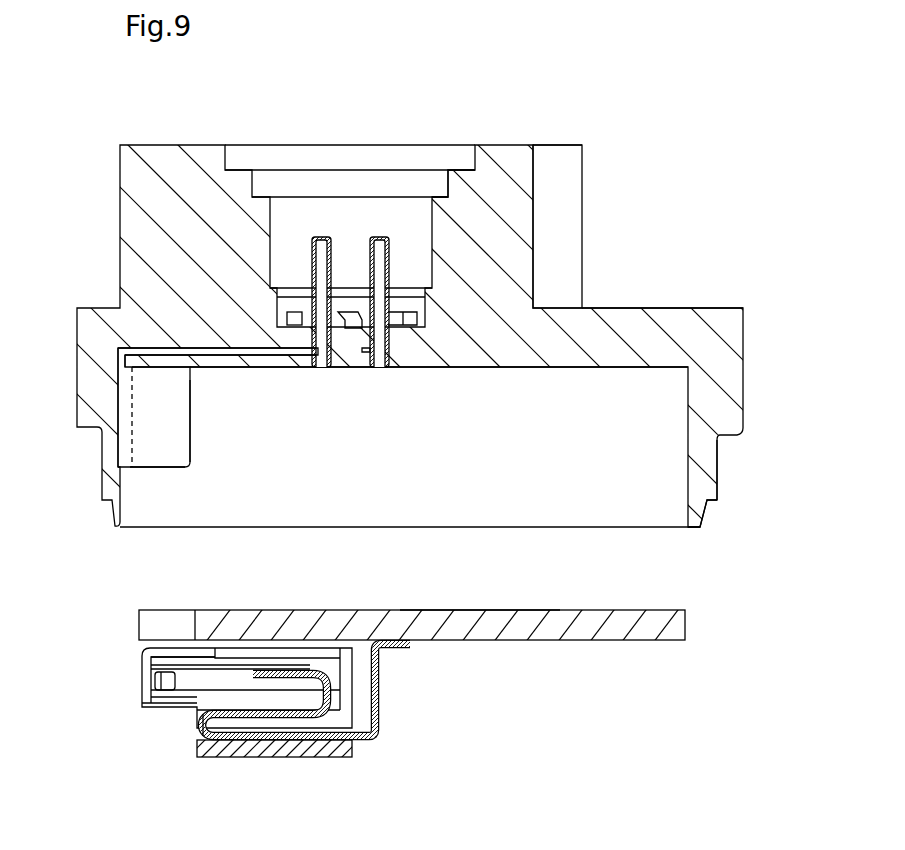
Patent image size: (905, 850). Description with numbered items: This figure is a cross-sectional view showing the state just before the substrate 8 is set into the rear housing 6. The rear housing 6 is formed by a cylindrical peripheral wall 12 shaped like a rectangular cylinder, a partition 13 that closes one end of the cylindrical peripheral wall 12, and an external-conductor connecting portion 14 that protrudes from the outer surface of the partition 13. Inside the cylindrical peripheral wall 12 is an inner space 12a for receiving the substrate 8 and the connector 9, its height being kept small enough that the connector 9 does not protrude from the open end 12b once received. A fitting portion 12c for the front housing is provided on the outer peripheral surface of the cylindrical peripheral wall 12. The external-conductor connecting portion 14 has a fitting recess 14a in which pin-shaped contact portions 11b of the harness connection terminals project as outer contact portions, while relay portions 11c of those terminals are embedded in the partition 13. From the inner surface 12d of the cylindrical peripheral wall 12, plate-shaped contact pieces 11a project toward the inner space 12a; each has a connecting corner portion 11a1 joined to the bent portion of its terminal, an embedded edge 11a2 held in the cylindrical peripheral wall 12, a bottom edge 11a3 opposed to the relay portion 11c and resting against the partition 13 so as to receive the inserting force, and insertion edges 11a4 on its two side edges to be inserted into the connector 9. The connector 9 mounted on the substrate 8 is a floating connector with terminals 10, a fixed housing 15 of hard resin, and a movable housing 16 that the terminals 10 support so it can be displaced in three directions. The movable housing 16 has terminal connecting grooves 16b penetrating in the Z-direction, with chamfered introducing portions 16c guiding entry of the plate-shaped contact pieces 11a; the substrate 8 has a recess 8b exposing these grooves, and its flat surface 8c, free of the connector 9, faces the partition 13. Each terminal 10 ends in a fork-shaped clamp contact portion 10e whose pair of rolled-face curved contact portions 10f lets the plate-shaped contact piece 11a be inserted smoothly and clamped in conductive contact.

The rear housing 6 is at (581, 145).
The substrate 8 is at (580, 640).
The recess 8b is at (139, 625).
The flat surface 8c is at (480, 610).
The connector 9 is at (275, 757).
The terminal 10 is at (381, 690).
The clamp contact portion 10e is at (195, 688).
The curved contact portion 10f is at (163, 678).
The plate-shaped contact piece 11a is at (185, 455).
The connecting corner portion 11a1 is at (122, 376).
The embedded edge 11a2 is at (124, 420).
The bottom edge 11a3 is at (160, 355).
The insertion edge 11a4 is at (190, 418).
The pin-shaped contact portion 11b is at (379, 237).
The relay portion 11c is at (203, 348).
The cylindrical peripheral wall 12 is at (638, 527).
The inner space 12a is at (410, 497).
The open end 12b is at (688, 527).
The fitting portion 12c is at (717, 480).
The inner surface 12d is at (535, 497).
The partition 13 is at (652, 308).
The external-conductor connecting portion 14 is at (583, 198).
The fitting recess 14a is at (432, 197).
The fixed housing 15 is at (335, 757).
The movable housing 16 is at (296, 660).
The terminal connecting groove 16b is at (187, 660).
The introducing portion 16c is at (168, 652).